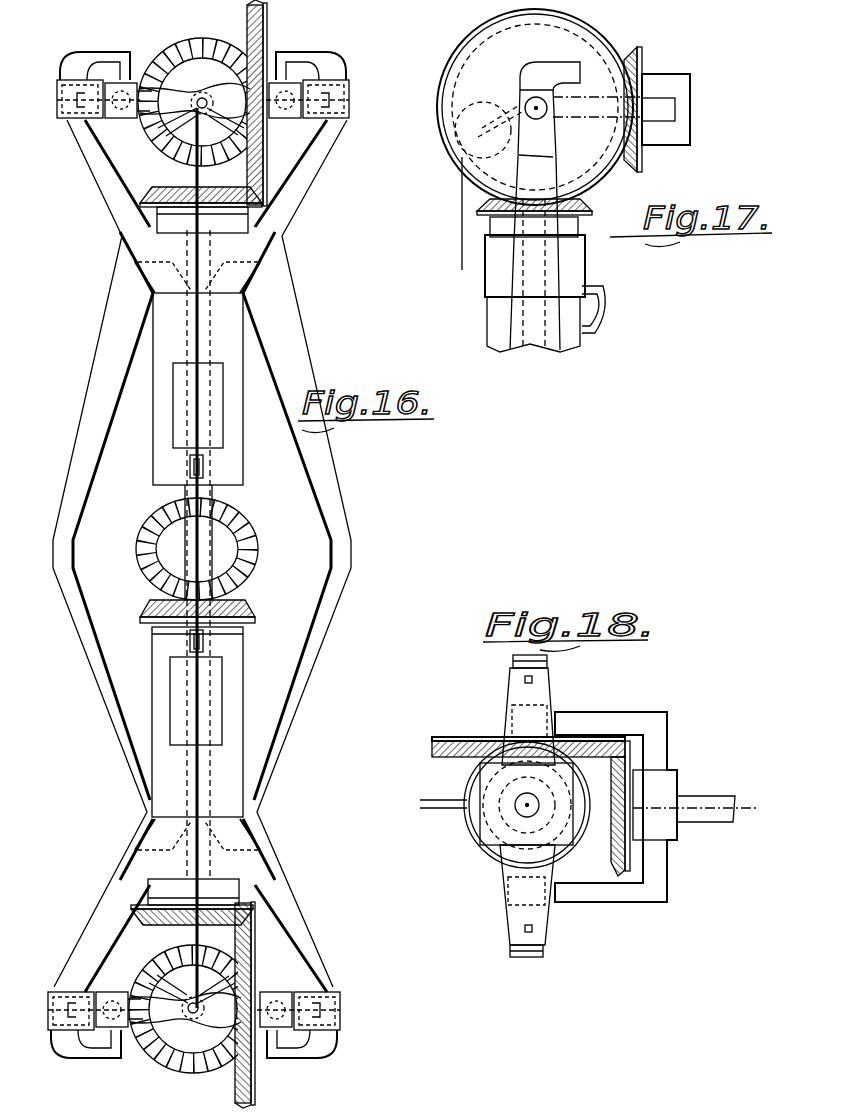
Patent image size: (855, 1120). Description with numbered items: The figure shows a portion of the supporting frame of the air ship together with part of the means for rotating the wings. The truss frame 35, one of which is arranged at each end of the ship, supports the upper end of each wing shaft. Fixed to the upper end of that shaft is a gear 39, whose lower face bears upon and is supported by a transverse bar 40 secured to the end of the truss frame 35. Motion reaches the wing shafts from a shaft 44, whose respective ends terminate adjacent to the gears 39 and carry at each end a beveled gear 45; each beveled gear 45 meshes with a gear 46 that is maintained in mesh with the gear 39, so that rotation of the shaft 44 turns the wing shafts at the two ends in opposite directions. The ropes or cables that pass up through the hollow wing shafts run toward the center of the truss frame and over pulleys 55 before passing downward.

In FIG. 16, the truss frame 35 is at (115, 700).
In FIG. 16, the gear 39 is at (172, 50).
In FIG. 17, the gear 39 is at (640, 163).
In FIG. 18, the gear 39 is at (477, 843).
In FIG. 16, the transverse bar 40 is at (168, 1013).
In FIG. 18, the transverse bar 40 is at (504, 730).
In FIG. 16, the shaft 44 is at (187, 550).
In FIG. 18, the shaft 44 is at (737, 810).
In FIG. 16, the beveled gear 45 is at (150, 197).
In FIG. 17, the beveled gear 45 is at (588, 207).
In FIG. 18, the beveled gear 45 is at (632, 862).
In FIG. 16, the gear 46 is at (267, 30).
In FIG. 17, the gear 46 is at (447, 100).
In FIG. 18, the gear 46 is at (442, 748).
In FIG. 16, the pulley 55 is at (203, 473).